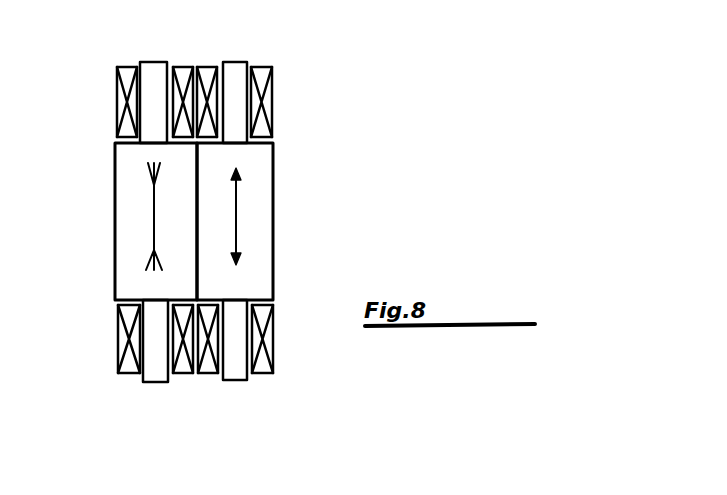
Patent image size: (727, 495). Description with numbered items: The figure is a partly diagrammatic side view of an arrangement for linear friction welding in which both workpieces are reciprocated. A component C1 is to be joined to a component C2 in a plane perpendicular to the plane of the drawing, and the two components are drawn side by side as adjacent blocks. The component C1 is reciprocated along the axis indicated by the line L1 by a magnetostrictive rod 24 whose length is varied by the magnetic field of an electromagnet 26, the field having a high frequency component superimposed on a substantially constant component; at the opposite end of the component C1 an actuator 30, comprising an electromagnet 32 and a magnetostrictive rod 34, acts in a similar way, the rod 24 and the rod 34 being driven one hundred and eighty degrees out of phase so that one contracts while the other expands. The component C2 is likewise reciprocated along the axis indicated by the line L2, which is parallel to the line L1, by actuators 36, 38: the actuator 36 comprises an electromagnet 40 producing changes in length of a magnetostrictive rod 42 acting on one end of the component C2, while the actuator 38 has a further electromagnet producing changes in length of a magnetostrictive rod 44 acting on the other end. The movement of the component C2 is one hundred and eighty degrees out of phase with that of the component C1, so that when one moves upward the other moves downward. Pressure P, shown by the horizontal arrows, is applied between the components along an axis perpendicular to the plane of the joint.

The magnetostrictive rod 24 is at (280, 377).
The electromagnet 26 is at (268, 340).
The actuator 30 is at (239, 51).
The electromagnet 32 is at (207, 70).
The magnetostrictive rod 34 is at (230, 72).
The actuator 36 is at (104, 377).
The actuator 38 is at (121, 60).
The electromagnet 40 is at (128, 340).
The magnetostrictive rod 42 is at (120, 97).
The magnetostrictive rod 44 is at (157, 70).
The axis line L1 is at (240, 208).
The axis line L2 is at (150, 208).
The component C1 is at (262, 277).
The component C2 is at (128, 272).
The pressure arrows P is at (115, 219).